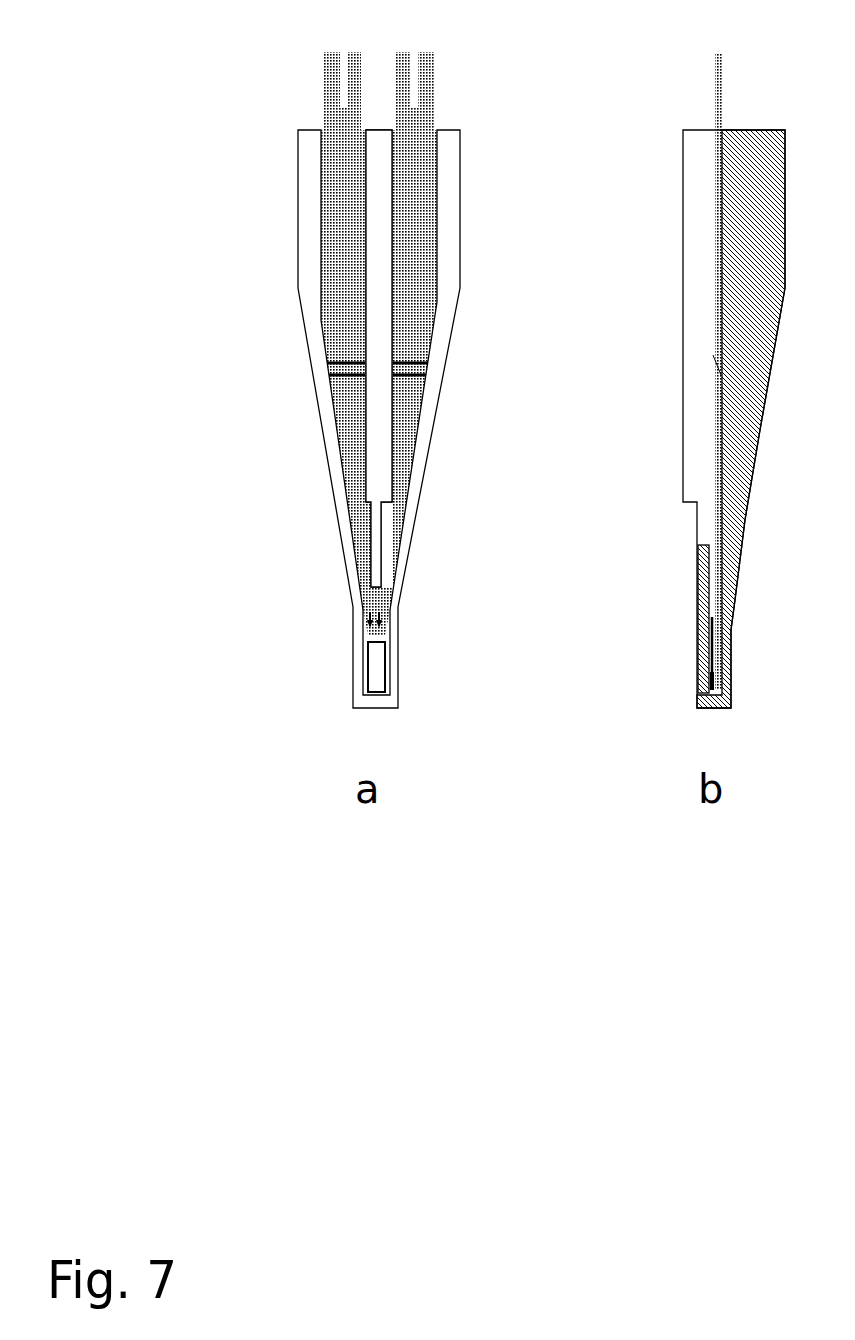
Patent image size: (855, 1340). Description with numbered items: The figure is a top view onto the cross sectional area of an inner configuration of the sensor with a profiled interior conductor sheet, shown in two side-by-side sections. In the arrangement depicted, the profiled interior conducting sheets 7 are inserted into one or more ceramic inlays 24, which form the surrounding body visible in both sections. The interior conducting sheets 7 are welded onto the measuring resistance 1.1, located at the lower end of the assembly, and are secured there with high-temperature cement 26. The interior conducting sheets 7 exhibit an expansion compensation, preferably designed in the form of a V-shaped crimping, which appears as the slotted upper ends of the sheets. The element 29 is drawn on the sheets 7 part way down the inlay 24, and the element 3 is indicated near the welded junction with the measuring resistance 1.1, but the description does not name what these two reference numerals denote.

The profiled interior conducting sheet 7 is at (413, 120).
The ceramic inlay 24 is at (700, 210).
The seal 29 is at (713, 365).
The high-temperature cement 26 is at (700, 553).
The electrode tip / contact 3 is at (380, 622).
The measuring resistance 1.1 is at (376, 680).